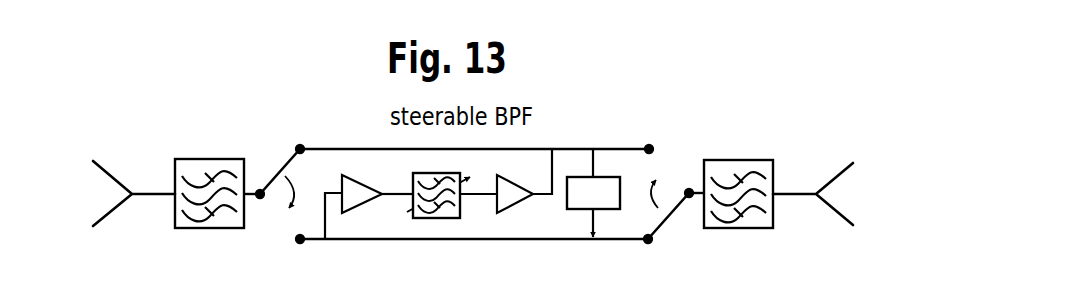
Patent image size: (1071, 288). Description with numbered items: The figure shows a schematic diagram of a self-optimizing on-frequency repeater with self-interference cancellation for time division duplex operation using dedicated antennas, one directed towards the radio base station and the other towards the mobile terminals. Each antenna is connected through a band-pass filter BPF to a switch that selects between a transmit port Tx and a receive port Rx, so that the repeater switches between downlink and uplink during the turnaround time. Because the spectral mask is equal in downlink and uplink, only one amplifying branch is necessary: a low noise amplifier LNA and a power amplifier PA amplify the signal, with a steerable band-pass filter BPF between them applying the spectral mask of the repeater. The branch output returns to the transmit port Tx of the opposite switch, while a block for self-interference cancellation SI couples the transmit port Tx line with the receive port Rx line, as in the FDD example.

The steerable band-pass filter BPF is at (217, 214).
The transmit switch port Tx is at (474, 132).
The receive switch port Rx is at (474, 258).
The low noise amplifier LNA is at (377, 206).
The power amplifier PA is at (524, 193).
The self-interference cancellation equipment SI is at (593, 193).